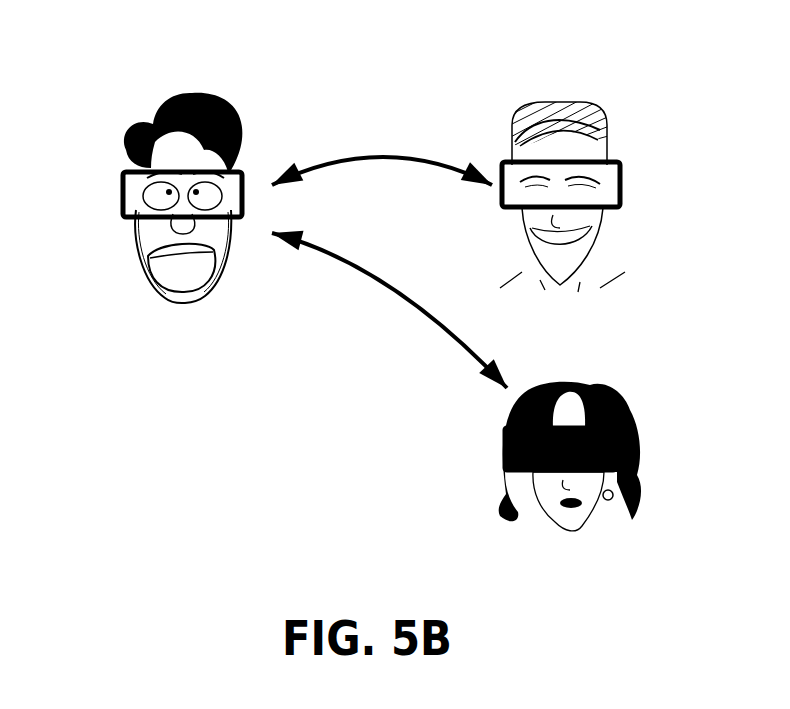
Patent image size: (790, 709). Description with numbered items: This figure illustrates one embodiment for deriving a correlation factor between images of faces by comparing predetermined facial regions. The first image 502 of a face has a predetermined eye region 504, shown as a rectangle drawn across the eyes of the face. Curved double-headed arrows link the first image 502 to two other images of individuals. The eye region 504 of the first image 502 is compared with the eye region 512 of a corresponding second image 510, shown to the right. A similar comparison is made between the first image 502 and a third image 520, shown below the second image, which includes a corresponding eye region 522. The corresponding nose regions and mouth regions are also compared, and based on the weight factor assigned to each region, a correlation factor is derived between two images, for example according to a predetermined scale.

The first image 502 is at (94, 71).
The eye region 504 is at (123, 178).
The second image 510 is at (629, 65).
The eye region 512 is at (620, 180).
The third image 520 is at (652, 353).
The eye region 522 is at (580, 428).